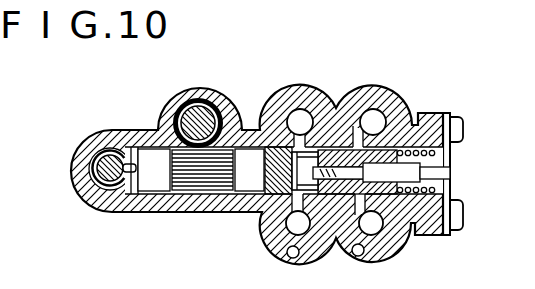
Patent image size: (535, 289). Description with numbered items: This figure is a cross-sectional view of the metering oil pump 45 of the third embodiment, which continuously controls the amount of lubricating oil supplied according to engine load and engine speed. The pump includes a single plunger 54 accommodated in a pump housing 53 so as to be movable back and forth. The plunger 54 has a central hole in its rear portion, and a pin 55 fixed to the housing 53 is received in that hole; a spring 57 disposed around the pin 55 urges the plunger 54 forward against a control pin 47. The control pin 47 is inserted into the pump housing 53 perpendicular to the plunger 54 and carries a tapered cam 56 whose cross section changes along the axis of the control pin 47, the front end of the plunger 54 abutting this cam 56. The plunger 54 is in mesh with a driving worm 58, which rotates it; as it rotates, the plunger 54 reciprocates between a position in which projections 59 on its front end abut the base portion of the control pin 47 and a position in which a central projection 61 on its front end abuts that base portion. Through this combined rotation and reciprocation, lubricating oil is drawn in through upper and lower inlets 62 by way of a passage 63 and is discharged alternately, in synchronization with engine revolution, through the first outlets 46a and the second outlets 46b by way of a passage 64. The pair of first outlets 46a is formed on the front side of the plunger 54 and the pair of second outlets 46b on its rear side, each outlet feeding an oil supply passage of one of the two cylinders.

The metering oil pump 45 is at (268, 54).
The first outlets 46a is at (300, 86).
The second outlets 46b is at (392, 91).
The control pin 47 is at (92, 136).
The pump housing 53 is at (215, 198).
The plunger 54 is at (247, 180).
The pin 55 is at (452, 158).
The tapered cam 56 is at (81, 181).
The spring 57 is at (424, 191).
The driving worm 58 is at (184, 88).
The projections 59 is at (132, 186).
The central projection 61 is at (135, 146).
The inlets 62 is at (331, 248).
The passage 63 is at (316, 148).
The passage 64 is at (357, 257).